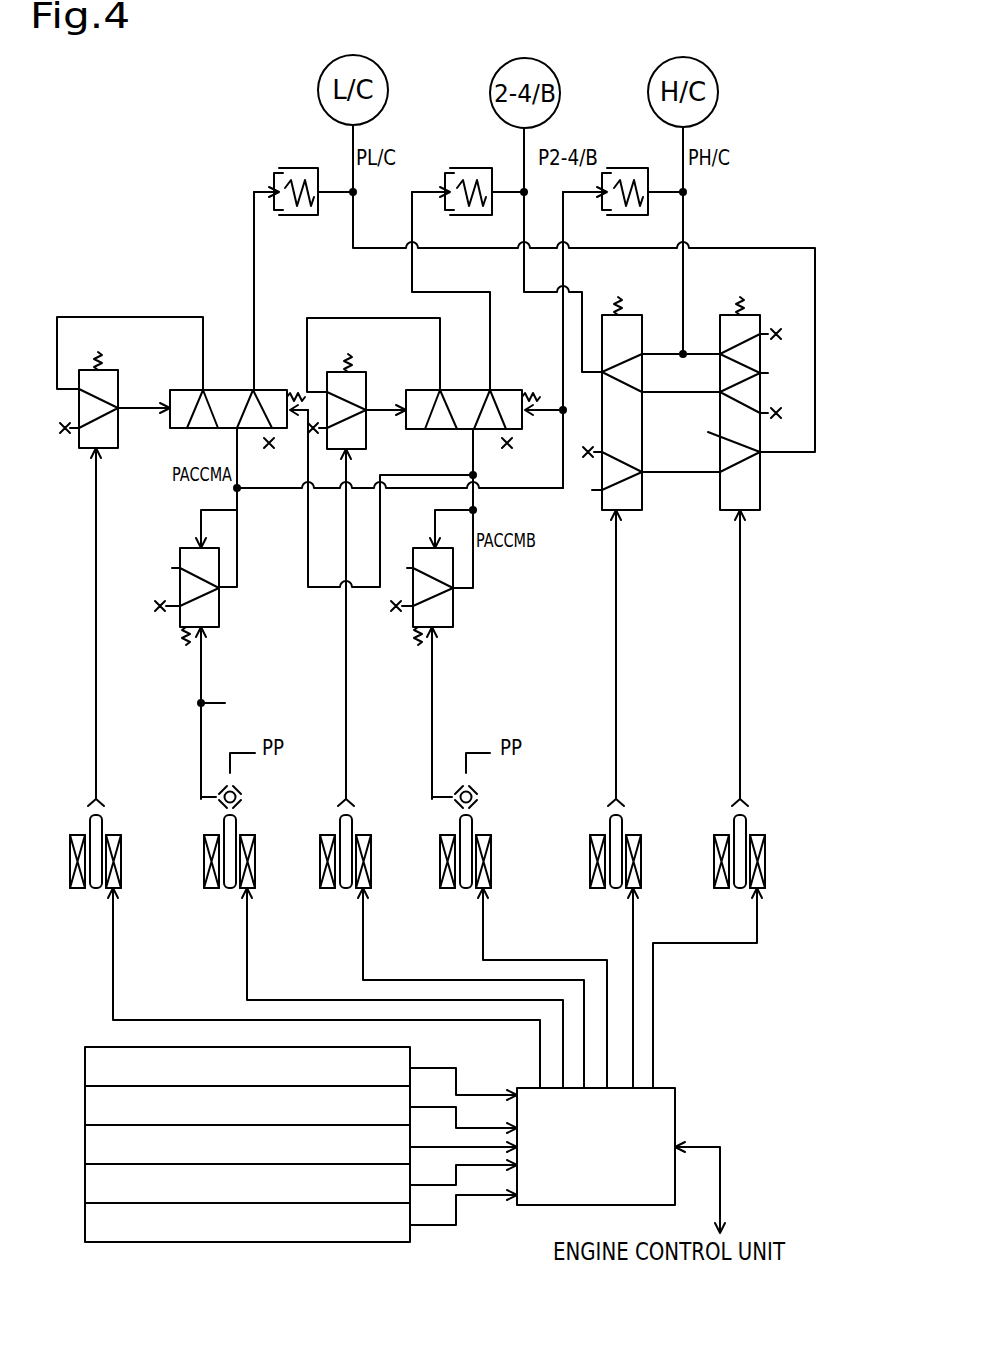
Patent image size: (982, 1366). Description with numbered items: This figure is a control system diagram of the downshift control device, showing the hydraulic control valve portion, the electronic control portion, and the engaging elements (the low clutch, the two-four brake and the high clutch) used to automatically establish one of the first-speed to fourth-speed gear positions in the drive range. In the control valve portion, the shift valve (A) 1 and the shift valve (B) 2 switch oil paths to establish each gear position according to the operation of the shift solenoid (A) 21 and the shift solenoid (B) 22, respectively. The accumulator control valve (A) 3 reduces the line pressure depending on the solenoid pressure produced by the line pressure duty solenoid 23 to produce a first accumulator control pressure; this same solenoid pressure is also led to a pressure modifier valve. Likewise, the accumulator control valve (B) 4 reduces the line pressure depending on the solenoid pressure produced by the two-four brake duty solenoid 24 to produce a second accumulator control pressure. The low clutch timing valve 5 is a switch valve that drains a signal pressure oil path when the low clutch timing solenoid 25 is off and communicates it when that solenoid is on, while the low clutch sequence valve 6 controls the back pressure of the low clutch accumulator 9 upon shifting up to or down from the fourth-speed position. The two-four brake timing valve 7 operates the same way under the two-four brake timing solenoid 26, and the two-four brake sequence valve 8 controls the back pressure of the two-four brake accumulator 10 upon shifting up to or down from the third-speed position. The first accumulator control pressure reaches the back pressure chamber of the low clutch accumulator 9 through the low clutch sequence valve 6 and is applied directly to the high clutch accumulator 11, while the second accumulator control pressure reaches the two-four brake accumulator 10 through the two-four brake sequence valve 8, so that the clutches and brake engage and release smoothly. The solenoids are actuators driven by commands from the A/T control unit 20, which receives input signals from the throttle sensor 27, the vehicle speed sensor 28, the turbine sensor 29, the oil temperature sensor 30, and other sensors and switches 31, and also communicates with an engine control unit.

The shift valve (A) 1 is at (638, 312).
The shift valve (B) 2 is at (758, 312).
The accumulator control valve (A) 3 is at (219, 607).
The accumulator control valve (B) 4 is at (453, 607).
The low clutch timing valve 5 is at (118, 387).
The low clutch sequence valve 6 is at (270, 388).
The 2-4 brake timing valve 7 is at (367, 385).
The 2-4 brake sequence valve 8 is at (503, 390).
The low clutch accumulator 9 is at (296, 168).
The 2-4 brake accumulator 10 is at (470, 168).
The high clutch accumulator 11 is at (628, 168).
The A/T control unit 20 is at (675, 1114).
The shift solenoid (A) 21 is at (634, 835).
The shift solenoid (B) 22 is at (759, 835).
The line pressure duty solenoid 23 is at (256, 835).
The 2-4/B duty solenoid 24 is at (498, 835).
The low clutch timing solenoid 25 is at (114, 835).
The 2-4 brake timing solenoid 26 is at (366, 835).
The throttle sensor 27 is at (85, 1066).
The vehicle speed sensor 28 is at (85, 1105).
The turbine sensor 29 is at (85, 1144).
The oil temperature sensor 30 is at (85, 1183).
The other sensors and switches 31 is at (85, 1222).